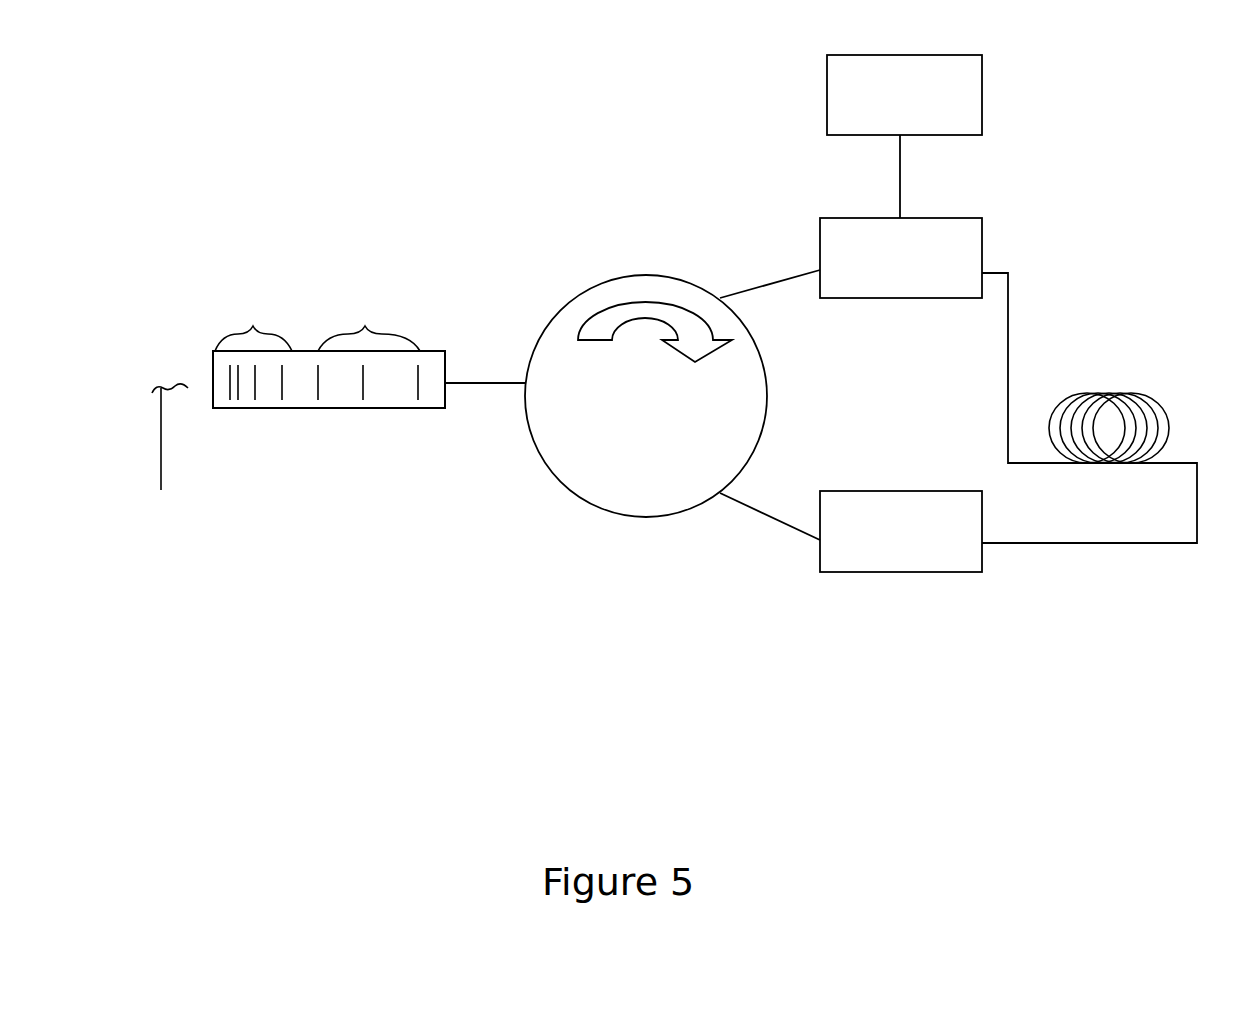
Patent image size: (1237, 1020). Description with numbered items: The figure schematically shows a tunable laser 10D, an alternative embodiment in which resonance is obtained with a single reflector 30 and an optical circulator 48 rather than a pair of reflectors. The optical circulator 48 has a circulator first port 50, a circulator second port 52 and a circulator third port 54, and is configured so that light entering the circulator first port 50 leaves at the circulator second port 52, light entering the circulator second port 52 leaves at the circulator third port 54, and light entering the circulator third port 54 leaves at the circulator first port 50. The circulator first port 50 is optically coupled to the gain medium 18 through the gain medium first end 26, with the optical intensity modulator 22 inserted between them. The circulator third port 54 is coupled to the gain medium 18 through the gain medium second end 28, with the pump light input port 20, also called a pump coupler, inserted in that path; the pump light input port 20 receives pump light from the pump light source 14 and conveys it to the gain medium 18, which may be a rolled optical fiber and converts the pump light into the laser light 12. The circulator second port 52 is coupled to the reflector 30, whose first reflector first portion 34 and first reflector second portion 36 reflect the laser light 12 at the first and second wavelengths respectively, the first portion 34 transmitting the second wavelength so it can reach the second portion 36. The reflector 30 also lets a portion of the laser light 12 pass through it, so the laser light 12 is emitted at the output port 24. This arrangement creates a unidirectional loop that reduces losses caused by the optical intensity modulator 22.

The tunable laser 10D is at (331, 582).
The laser light 12 is at (163, 468).
The pump light source 14 is at (904, 95).
The gain medium 18 is at (1060, 402).
The pump light input port 20 is at (901, 258).
The optical intensity modulator 22 is at (901, 531).
The output port 24 is at (213, 390).
The gain medium first end 26 is at (1170, 462).
The gain medium second end 28 is at (1007, 462).
The reflector 30 is at (315, 422).
The first reflector first portion 34 is at (369, 318).
The first reflector second portion 36 is at (253, 318).
The optical circulator 48 is at (575, 497).
The circulator first port 50 is at (722, 490).
The circulator second port 52 is at (526, 383).
The circulator third port 54 is at (718, 298).